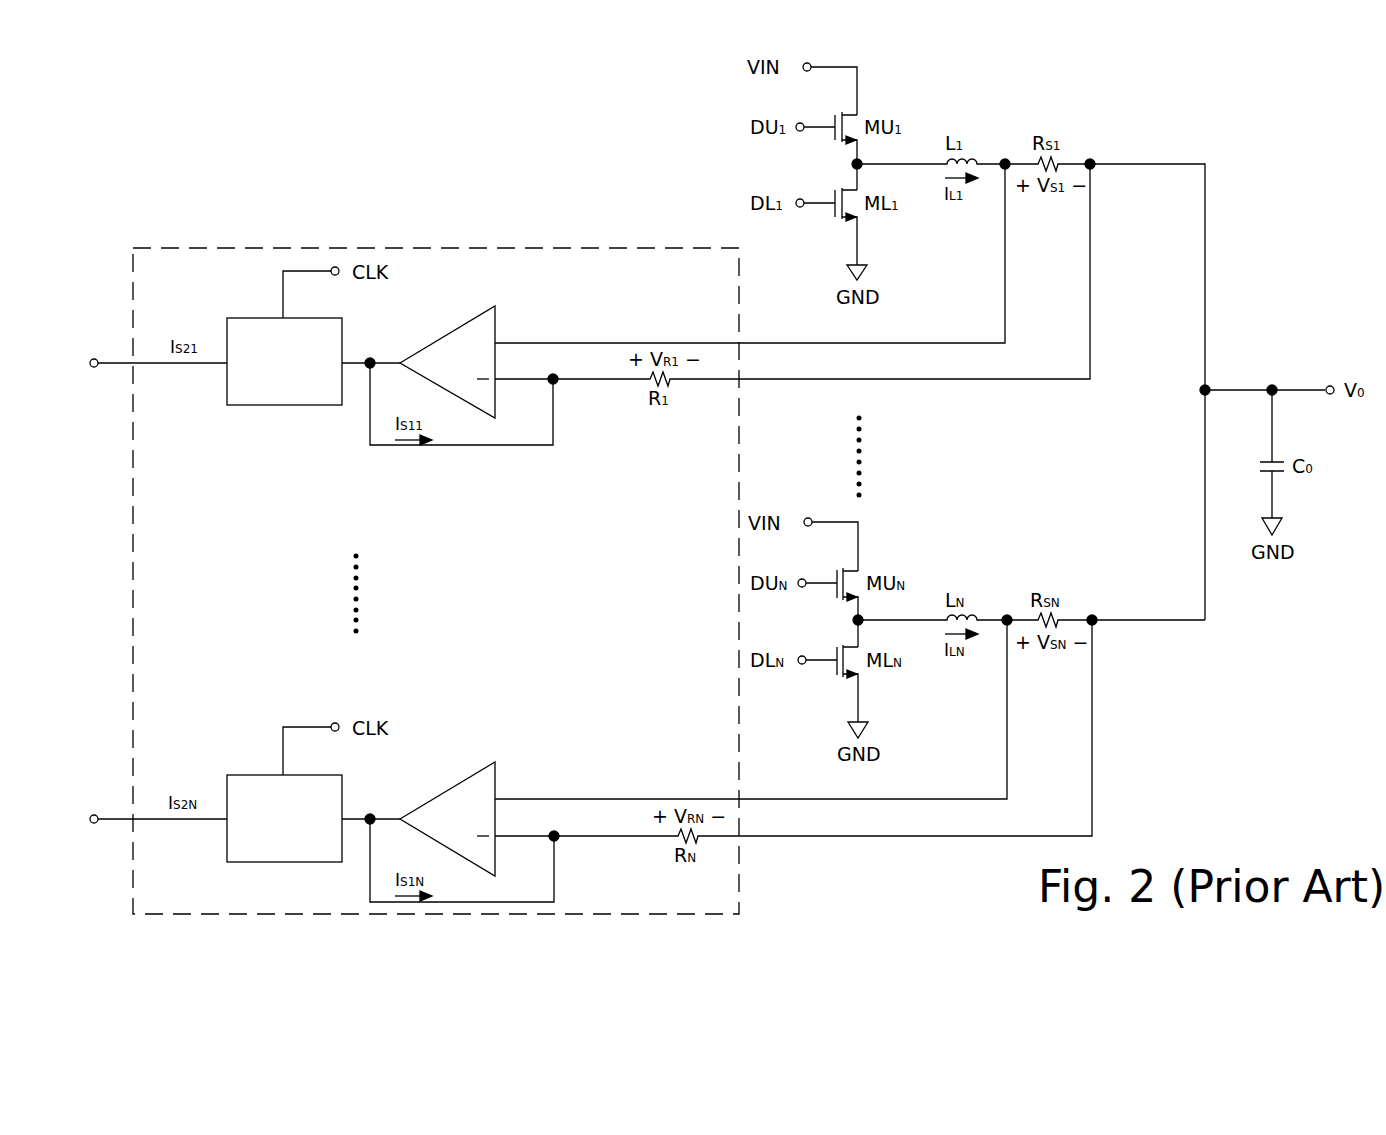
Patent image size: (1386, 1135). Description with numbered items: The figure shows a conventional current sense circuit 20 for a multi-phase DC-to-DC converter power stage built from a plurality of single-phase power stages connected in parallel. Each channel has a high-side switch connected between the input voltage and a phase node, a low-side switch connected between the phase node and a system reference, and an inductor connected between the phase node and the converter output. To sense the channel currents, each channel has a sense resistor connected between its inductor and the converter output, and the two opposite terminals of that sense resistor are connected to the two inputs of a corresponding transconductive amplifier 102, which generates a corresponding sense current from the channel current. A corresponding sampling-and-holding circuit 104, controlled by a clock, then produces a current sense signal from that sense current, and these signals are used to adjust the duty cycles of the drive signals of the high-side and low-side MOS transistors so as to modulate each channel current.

The current sense circuit 20 is at (375, 248).
The transconductive amplifier 102 is at (445, 336).
The sampling-and-holding circuit 104 is at (283, 405).